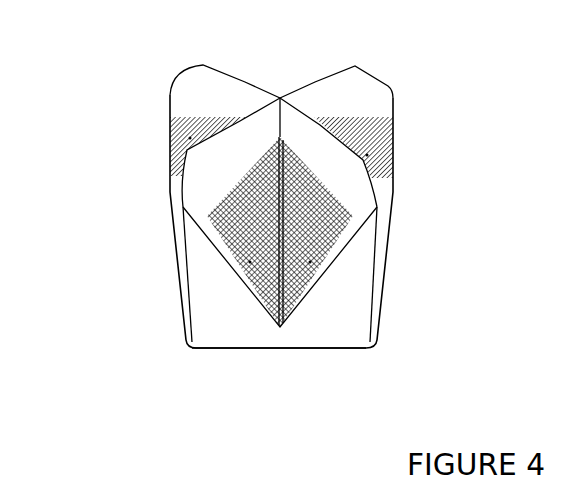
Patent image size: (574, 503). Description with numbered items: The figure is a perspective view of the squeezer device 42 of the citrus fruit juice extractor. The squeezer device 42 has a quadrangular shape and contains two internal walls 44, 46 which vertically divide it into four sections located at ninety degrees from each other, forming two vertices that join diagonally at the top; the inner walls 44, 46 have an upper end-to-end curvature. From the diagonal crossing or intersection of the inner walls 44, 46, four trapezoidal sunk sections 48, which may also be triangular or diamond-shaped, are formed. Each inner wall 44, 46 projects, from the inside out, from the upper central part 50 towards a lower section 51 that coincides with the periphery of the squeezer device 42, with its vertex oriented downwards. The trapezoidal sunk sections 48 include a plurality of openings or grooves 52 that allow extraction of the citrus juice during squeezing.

The squeezer device 42 is at (391, 282).
The internal wall 44 is at (367, 88).
The internal wall 46 is at (213, 88).
The trapezoidal sunk section 48 is at (187, 122).
The upper central part 50 is at (280, 88).
The lower section 51 is at (278, 326).
The openings or grooves 52 is at (190, 138).